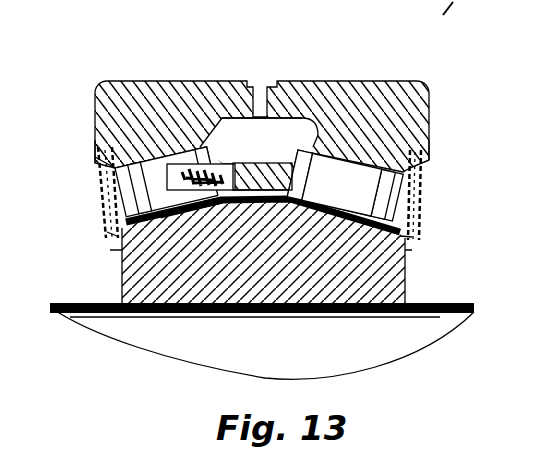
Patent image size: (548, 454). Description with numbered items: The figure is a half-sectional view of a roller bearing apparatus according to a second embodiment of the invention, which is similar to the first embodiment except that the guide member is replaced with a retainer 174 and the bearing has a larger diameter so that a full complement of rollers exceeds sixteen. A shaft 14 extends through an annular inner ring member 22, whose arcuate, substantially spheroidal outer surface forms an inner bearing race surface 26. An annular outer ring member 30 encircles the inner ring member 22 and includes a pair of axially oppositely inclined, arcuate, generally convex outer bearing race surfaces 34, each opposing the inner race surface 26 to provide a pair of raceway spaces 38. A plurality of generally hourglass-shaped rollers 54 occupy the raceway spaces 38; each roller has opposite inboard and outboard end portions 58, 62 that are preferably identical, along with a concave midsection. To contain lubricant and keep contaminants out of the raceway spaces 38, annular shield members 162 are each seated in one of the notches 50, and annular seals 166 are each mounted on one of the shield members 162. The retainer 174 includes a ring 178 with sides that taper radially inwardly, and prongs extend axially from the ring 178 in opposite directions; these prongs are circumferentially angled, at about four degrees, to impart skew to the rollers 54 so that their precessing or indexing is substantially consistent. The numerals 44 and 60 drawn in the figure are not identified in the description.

The shaft 14 is at (442, 307).
The inner ring member 22 is at (270, 318).
The inner bearing race surface 26 is at (250, 205).
The outer ring member 30 is at (384, 84).
The outer bearing race surfaces 34 is at (163, 160).
The raceway spaces 38 is at (110, 250).
The mounting surface 44 is at (207, 222).
The notches 50 is at (430, 153).
The rollers 54 is at (95, 193).
The inboard end portion 58 is at (208, 142).
The housing left edge 60 is at (91, 147).
The outboard end portion 62 is at (417, 192).
The shield members 162 is at (95, 157).
The seals 166 is at (107, 232).
The retainer 174 is at (257, 156).
The ring 178 is at (328, 188).